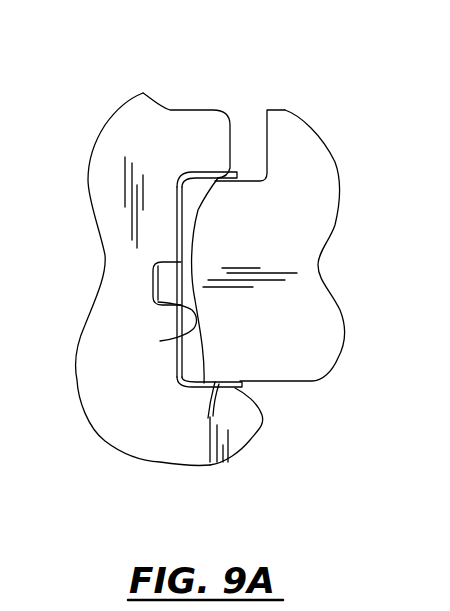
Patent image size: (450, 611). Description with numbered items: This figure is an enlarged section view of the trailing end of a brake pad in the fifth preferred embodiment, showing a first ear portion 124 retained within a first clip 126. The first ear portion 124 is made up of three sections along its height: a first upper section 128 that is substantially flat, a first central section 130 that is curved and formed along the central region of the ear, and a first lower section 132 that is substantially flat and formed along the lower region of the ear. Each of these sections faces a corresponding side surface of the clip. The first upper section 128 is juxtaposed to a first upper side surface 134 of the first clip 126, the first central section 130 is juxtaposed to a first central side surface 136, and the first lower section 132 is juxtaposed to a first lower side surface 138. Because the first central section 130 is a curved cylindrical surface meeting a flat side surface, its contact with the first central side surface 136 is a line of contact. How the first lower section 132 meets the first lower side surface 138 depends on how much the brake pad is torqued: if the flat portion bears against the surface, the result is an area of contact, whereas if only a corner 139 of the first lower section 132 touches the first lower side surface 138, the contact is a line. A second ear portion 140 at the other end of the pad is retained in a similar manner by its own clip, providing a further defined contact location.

The first ear portion 124 is at (300, 253).
The first clip 126 is at (178, 223).
The first upper section 128 is at (215, 190).
The first central section 130 is at (193, 292).
The first lower section 132 is at (232, 390).
The first upper side surface 134 is at (188, 181).
The first central side surface 136 is at (182, 335).
The first lower side surface 138 is at (177, 378).
The corner 139 is at (210, 378).
The second ear portion 140 is at (437, 336).